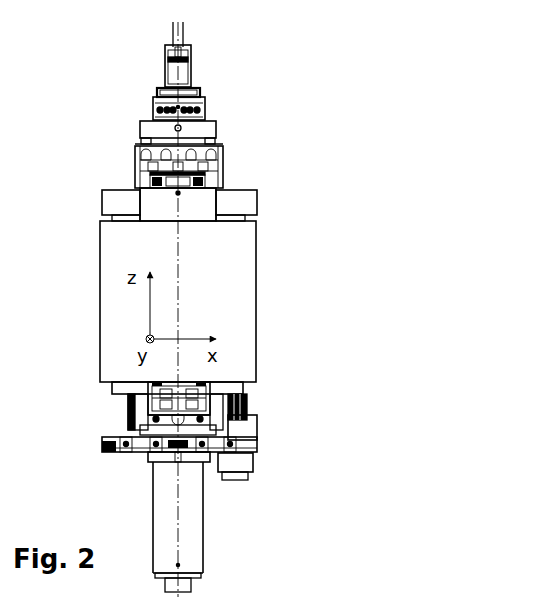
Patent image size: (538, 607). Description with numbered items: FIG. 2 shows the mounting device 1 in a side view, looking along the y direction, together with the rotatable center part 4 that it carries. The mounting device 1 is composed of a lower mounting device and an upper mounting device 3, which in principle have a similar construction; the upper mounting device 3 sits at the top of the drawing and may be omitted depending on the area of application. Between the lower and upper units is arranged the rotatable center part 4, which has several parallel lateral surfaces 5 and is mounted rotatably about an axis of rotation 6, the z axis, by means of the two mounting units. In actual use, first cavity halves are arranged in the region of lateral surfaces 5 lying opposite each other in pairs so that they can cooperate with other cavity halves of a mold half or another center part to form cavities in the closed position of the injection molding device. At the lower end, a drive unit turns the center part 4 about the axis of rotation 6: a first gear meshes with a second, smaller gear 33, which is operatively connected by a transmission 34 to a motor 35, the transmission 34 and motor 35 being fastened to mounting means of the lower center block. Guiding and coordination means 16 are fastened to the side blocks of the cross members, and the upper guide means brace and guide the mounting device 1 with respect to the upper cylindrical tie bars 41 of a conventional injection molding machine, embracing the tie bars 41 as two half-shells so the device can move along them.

The mounting device 1 is at (254, 59).
The upper mounting device 3 is at (243, 142).
The rotatable center part 4 is at (230, 186).
The tie bars 41 is at (287, 186).
The lateral surfaces 5 is at (226, 301).
The axis of rotation 6 is at (175, 237).
The guiding and coordination means 16 is at (235, 382).
The second gear 33 is at (253, 405).
The transmission 34 is at (293, 441).
The motor 35 is at (288, 484).